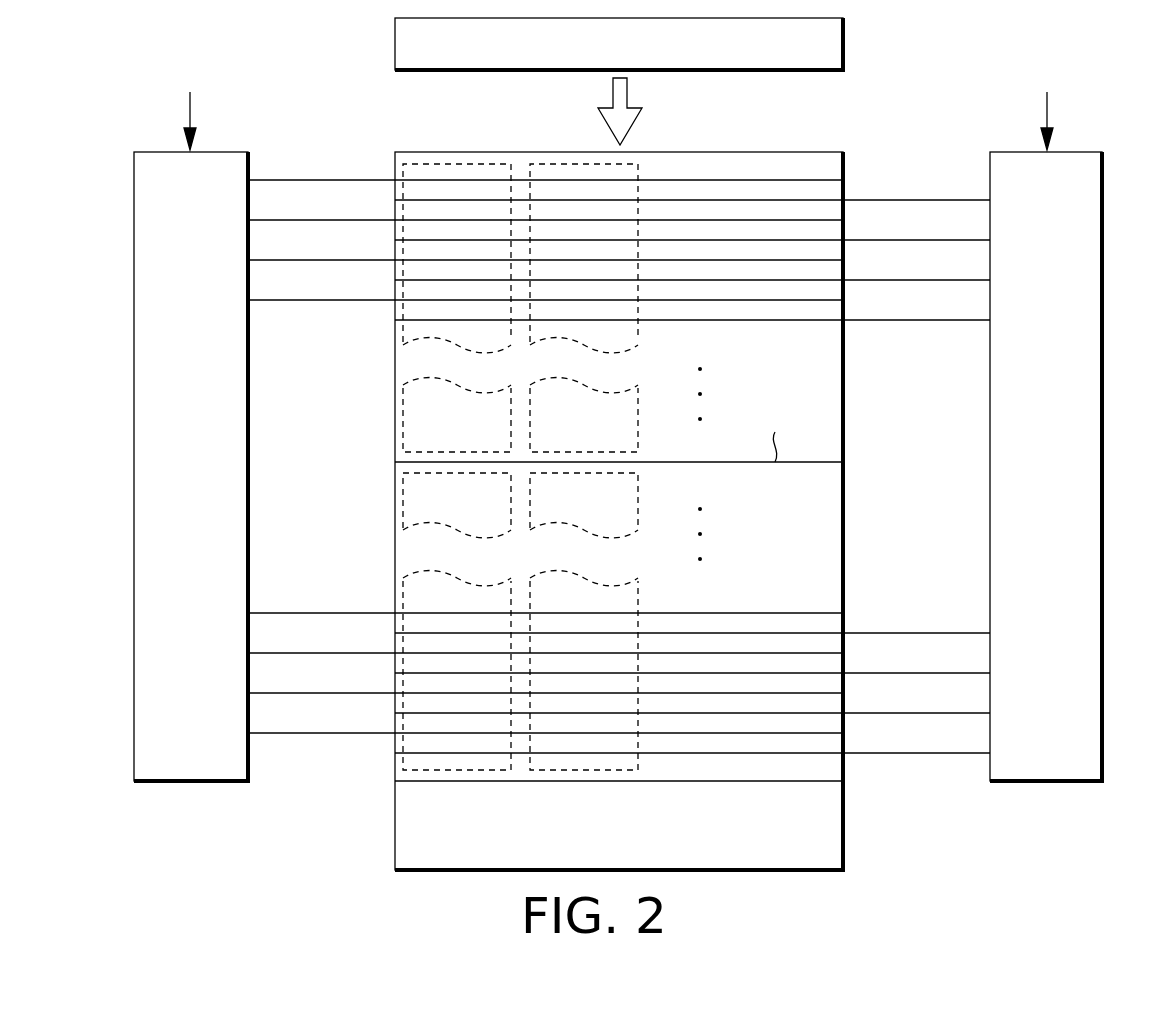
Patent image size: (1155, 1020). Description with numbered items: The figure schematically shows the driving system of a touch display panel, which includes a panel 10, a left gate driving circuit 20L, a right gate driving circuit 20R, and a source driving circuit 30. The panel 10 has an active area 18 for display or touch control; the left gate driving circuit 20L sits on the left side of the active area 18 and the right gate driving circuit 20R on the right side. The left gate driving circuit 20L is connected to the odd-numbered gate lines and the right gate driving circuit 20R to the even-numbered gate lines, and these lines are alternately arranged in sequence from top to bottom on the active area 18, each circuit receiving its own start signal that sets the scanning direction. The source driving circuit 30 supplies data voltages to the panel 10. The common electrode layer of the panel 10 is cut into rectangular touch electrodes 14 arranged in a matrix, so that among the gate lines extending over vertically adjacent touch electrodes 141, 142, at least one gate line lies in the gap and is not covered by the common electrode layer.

The panel 10 is at (395, 150).
The touch electrodes 14 is at (452, 467).
The touch electrode 141 is at (410, 418).
The touch electrode 142 is at (410, 510).
The active area 18 is at (745, 548).
The left gate driving circuit 20L is at (190, 783).
The right gate driving circuit 20R is at (1047, 783).
The source driving circuit 30 is at (620, 81).